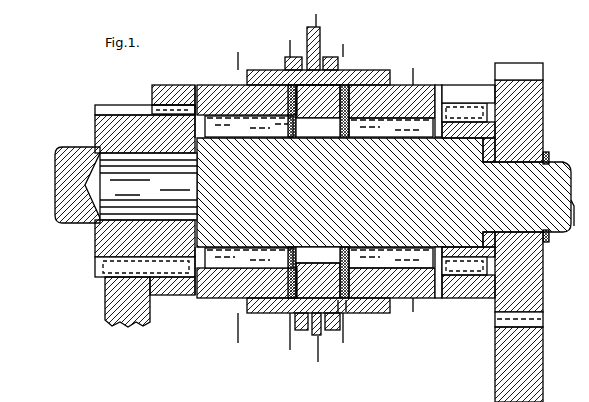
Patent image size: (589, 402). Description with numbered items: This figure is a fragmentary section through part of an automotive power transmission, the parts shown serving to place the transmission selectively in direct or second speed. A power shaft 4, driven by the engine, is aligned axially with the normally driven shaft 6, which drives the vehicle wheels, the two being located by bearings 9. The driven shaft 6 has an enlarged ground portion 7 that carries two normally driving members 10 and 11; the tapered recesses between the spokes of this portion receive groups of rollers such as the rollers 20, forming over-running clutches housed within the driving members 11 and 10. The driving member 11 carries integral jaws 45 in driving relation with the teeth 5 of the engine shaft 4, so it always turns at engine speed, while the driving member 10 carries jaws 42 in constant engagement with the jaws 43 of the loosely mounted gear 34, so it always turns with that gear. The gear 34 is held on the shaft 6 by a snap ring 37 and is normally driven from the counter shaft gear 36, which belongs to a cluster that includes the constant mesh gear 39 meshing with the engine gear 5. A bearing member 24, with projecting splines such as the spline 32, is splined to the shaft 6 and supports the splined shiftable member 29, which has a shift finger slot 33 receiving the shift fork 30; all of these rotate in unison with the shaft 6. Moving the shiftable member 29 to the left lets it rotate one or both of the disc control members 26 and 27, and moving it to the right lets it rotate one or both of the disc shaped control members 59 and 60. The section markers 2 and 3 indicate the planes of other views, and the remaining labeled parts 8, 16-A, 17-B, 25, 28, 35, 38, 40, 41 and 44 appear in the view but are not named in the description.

The section line 2- 2 is at (238, 52).
The section line 3- 3 is at (290, 40).
The power shaft 4 is at (82, 160).
The teeth 5 is at (110, 113).
The normally driven shaft 6 is at (560, 178).
The enlarged portion 7 is at (413, 75).
The retaining collar 8 is at (90, 240).
The bearings 9 is at (97, 270).
The normally driving member 10 is at (343, 44).
The normally driving member 11 is at (176, 96).
The sleeve 16-A is at (235, 128).
The sleeve 17-B is at (436, 115).
The rollers 20 is at (208, 252).
The bearing member 24 is at (350, 82).
The ring face 25 is at (362, 83).
The disc control member 26 is at (272, 316).
The disc control member 27 is at (287, 312).
The keyway 28 is at (577, 212).
The splined shiftable member 29 is at (388, 72).
The shift fork 30 is at (315, 42).
The projecting spline 32 is at (342, 312).
The shift finger slot 33 is at (317, 318).
The loosely mounted gear 34 is at (543, 78).
The housing cavity 35 is at (525, 70).
The counter shaft gear 36 is at (530, 337).
The snap ring 37 is at (548, 240).
The seal 38 is at (547, 156).
The constant mesh gear 39 is at (121, 318).
The bearing 40 is at (445, 262).
The bearing support 41 is at (460, 290).
The jaws 42 is at (464, 114).
The jaws 43 is at (490, 120).
The bearing support 44 is at (495, 128).
The jaws 45 is at (163, 110).
The disc shaped control member 59 is at (339, 316).
The disc shaped control member 60 is at (347, 312).